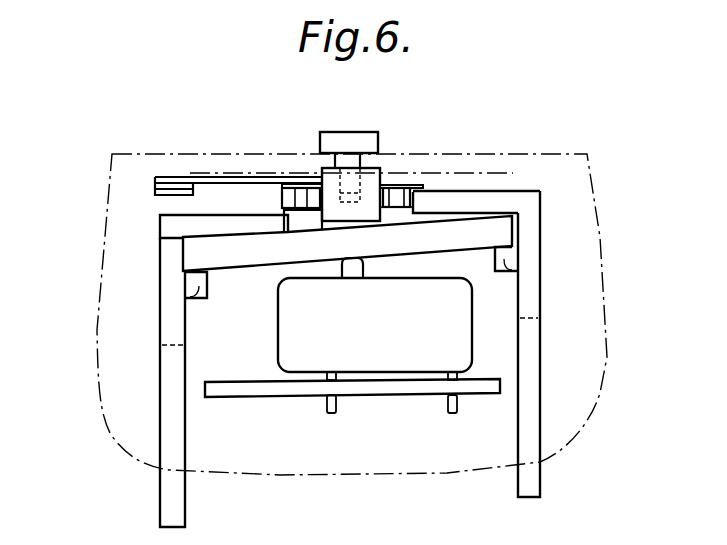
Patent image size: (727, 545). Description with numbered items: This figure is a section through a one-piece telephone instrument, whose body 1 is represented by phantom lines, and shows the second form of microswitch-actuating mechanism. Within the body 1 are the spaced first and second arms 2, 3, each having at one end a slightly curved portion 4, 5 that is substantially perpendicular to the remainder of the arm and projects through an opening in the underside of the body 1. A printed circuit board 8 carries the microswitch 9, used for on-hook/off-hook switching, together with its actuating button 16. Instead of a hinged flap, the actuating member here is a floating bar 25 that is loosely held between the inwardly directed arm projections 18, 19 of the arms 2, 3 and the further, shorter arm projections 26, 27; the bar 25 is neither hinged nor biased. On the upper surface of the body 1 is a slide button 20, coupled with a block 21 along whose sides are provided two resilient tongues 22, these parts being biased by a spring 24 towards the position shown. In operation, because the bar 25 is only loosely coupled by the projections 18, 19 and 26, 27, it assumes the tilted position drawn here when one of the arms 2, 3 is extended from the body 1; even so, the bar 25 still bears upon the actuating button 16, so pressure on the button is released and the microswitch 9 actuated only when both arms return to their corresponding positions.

The body 1 is at (616, 332).
The first arm 2 is at (530, 247).
The second arm 3 is at (170, 283).
The curved portion 4 is at (533, 487).
The curved portion 5 is at (172, 484).
The printed circuit board 8 is at (290, 387).
The microswitch 9 is at (408, 352).
The actuating button 16 is at (352, 268).
The arm projection 18 is at (487, 197).
The arm projection 19 is at (203, 223).
The slide button 20 is at (357, 140).
The block 21 is at (368, 180).
The resilient tongue 22 is at (282, 197).
The spring 24 is at (173, 181).
The floating bar 25 is at (200, 254).
The shorter arm projection 26 is at (504, 262).
The shorter arm projection 27 is at (200, 302).